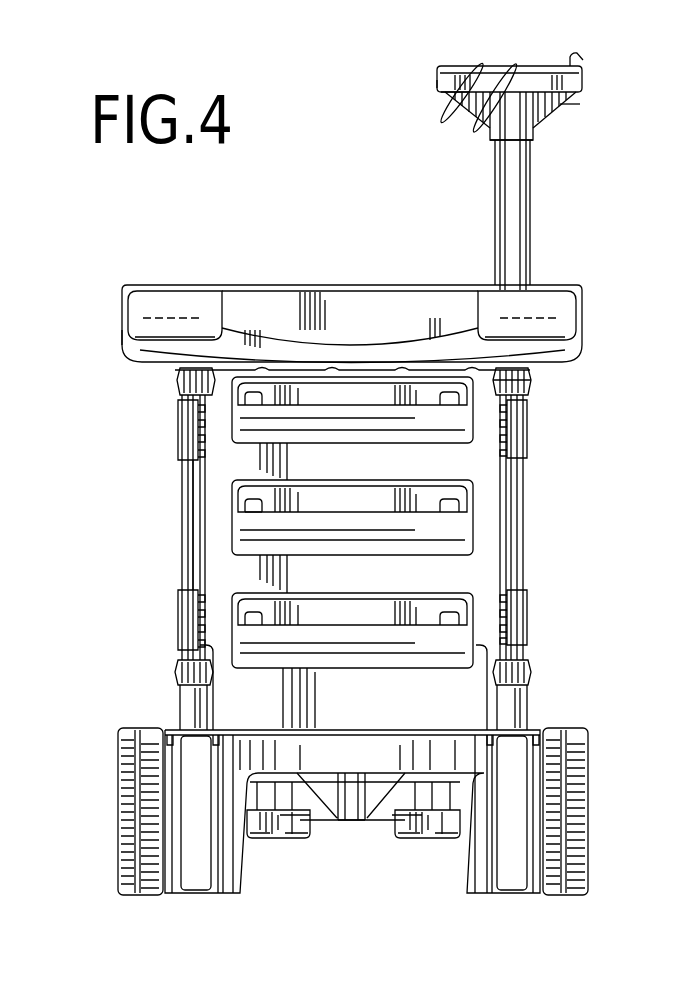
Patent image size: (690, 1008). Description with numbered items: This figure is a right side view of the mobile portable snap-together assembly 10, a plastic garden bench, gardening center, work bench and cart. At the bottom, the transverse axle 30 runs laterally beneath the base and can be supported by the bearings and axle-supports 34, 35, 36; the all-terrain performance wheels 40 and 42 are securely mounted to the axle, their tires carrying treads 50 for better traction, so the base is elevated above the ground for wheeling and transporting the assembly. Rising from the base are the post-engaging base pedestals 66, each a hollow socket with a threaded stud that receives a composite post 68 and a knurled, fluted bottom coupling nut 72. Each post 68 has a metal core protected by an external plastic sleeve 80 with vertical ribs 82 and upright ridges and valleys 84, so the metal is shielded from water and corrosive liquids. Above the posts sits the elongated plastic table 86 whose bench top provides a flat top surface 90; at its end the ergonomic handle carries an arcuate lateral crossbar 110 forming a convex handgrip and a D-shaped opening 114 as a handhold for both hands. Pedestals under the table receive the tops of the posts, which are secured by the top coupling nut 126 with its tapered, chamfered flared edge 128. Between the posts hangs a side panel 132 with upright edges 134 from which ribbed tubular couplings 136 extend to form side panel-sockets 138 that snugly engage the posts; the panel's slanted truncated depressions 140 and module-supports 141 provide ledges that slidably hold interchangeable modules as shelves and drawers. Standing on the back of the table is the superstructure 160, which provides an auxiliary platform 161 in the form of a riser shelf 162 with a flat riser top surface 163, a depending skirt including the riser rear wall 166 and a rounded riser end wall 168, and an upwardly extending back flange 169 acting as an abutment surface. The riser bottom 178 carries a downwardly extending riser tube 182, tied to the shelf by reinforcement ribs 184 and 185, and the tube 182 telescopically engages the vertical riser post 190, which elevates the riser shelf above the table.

The mobile portable snap-together assembly 10 is at (424, 240).
The transverse axle 30 is at (318, 838).
The axle-support 34 is at (265, 845).
The axle-support 35 is at (352, 828).
The axle-support 36 is at (420, 845).
The all-terrain performance wheel 40 is at (587, 885).
The all-terrain performance wheel 42 is at (120, 885).
The treads 50 is at (560, 735).
The post-engaging base pedestal 66 is at (522, 708).
The composite post 68 is at (517, 578).
The bottom coupling nut 72 is at (531, 675).
The plastic sleeve 80 is at (188, 565).
The vertical ribs 82 is at (522, 480).
The ridges and valleys 84 is at (196, 490).
The table 86 is at (170, 285).
The top surface 90 is at (275, 285).
The lateral crossbar 110 is at (400, 350).
The D-shaped opening 114 is at (475, 335).
The top coupling nut 126 is at (531, 375).
The tapered flared edge 128 is at (531, 388).
The side panel 132 is at (262, 697).
The upright edges 134 is at (503, 503).
The ribbed tubular couplings 136 is at (180, 425).
The side panel-sockets 138 is at (180, 622).
The truncated depressions 140 is at (448, 538).
The module-supports 141 is at (245, 512).
The superstructure 160 is at (585, 72).
The auxiliary platform 161 is at (437, 70).
The riser shelf 162 is at (490, 118).
The riser top surface 163 is at (455, 104).
The riser rear wall 166 is at (580, 93).
The riser end wall 168 is at (440, 82).
The back flange 169 is at (583, 56).
The riser bottom 178 is at (565, 104).
The riser tube 182 is at (522, 130).
The reinforcement rib 184 is at (450, 96).
The reinforcement rib 185 is at (548, 112).
The riser post 190 is at (530, 232).